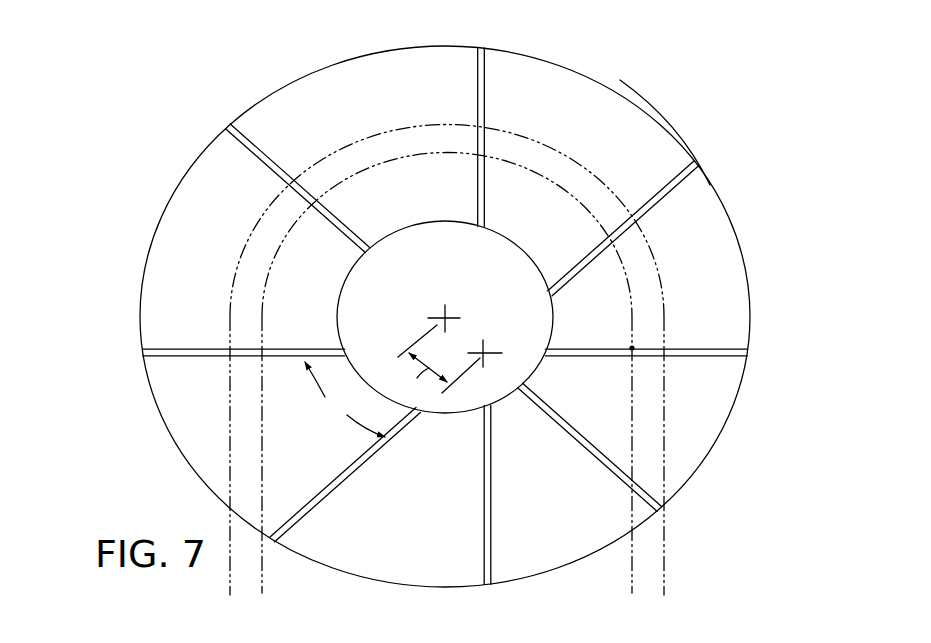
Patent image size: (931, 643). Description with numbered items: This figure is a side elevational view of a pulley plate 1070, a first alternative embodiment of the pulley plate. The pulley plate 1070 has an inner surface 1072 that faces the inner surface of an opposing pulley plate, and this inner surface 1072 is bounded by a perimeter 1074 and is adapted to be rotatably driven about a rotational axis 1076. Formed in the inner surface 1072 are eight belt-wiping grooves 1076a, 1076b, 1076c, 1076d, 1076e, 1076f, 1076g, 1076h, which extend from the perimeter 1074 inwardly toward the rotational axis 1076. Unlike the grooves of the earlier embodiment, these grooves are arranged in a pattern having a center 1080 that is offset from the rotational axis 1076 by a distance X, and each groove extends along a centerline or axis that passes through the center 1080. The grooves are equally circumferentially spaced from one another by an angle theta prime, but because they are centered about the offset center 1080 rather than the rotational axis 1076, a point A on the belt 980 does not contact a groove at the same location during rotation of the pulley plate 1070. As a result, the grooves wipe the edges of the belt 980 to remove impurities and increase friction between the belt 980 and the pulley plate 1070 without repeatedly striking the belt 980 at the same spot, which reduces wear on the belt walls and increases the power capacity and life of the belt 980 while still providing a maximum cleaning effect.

The pulley plate 1070 is at (150, 146).
The inner surface 1072 is at (593, 102).
The perimeter 1074 is at (672, 130).
The rotational axis 1076 is at (441, 312).
The belt-wiping groove 1076a is at (585, 447).
The belt-wiping groove 1076b is at (484, 503).
The belt-wiping groove 1076c is at (326, 500).
The belt-wiping groove 1076d is at (176, 349).
The belt-wiping groove 1076e is at (265, 153).
The belt-wiping groove 1076f is at (486, 88).
The belt-wiping groove 1076g is at (684, 178).
The belt-wiping groove 1076h is at (726, 349).
The center 1080 is at (488, 348).
The belt 980 is at (668, 467).
The point on belt A is at (632, 350).